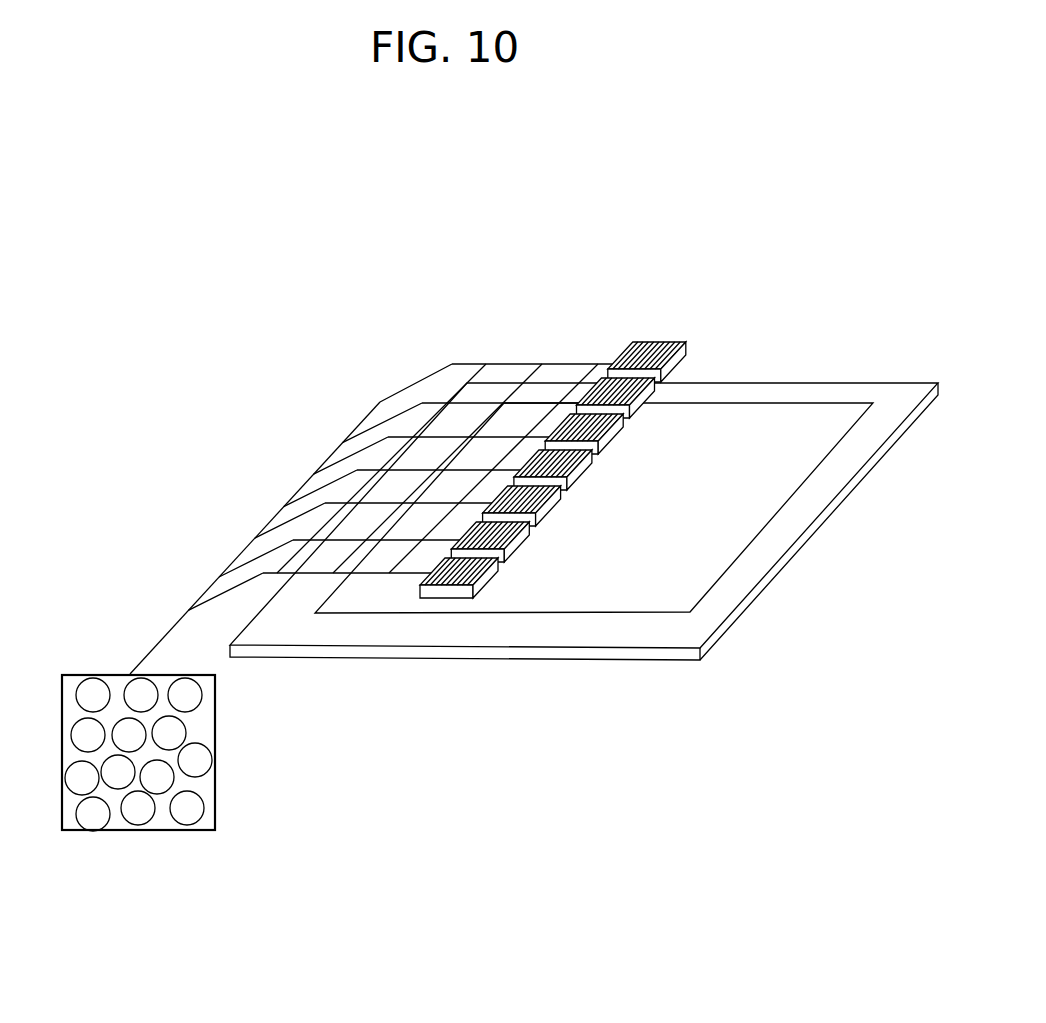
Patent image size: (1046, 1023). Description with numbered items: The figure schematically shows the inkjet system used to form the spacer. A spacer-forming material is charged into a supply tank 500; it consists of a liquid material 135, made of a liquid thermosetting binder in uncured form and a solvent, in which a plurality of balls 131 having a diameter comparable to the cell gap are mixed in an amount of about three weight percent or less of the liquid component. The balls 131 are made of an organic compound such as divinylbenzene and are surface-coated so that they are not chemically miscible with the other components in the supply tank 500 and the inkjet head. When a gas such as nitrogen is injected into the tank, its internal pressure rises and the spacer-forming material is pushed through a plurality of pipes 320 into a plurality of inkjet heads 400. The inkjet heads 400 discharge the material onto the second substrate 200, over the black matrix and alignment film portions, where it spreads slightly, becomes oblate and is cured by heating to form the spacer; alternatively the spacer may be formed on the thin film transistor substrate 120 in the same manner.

The thin film transistor substrate 120 is at (823, 490).
The second substrate 200 is at (792, 401).
The pipes 320 is at (408, 385).
The inkjet head 400 is at (686, 346).
The supply tank 500 is at (215, 693).
The liquid material 135 is at (197, 732).
The balls 131 is at (192, 807).